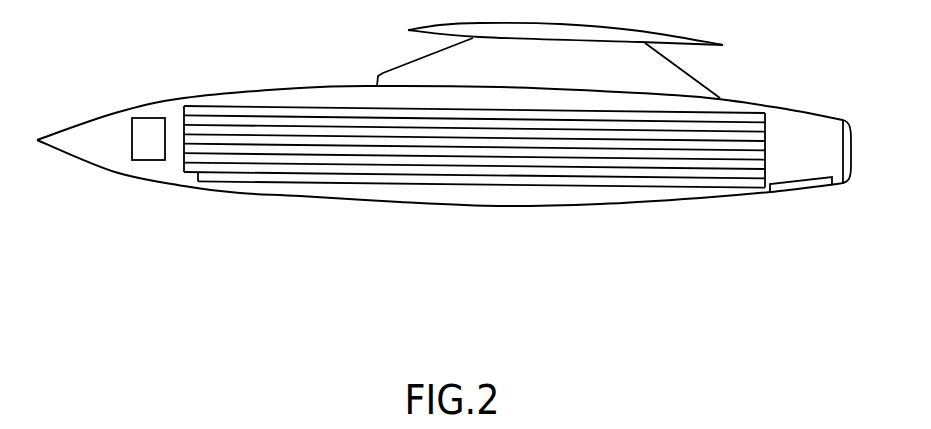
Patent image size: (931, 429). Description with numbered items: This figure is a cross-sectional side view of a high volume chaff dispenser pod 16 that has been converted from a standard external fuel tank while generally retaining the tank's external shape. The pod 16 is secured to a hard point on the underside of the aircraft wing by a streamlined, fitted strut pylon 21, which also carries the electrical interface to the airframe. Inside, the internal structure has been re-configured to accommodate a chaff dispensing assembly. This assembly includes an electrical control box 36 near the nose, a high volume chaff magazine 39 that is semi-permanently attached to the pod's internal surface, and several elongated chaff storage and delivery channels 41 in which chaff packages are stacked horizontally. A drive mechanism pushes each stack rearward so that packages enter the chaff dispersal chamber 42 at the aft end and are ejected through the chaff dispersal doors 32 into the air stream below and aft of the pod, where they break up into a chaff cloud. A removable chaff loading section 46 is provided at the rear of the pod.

The high volume chaff dispenser pod 16 is at (218, 190).
The strut pylon 21 is at (660, 73).
The chaff dispersal doors 32 is at (790, 190).
The electrical control box 36 is at (145, 130).
The high volume chaff magazine 39 is at (405, 183).
The chaff storage and delivery channels 41 is at (647, 157).
The chaff dispersal chamber 42 is at (805, 148).
The removable chaff loading section 46 is at (822, 102).